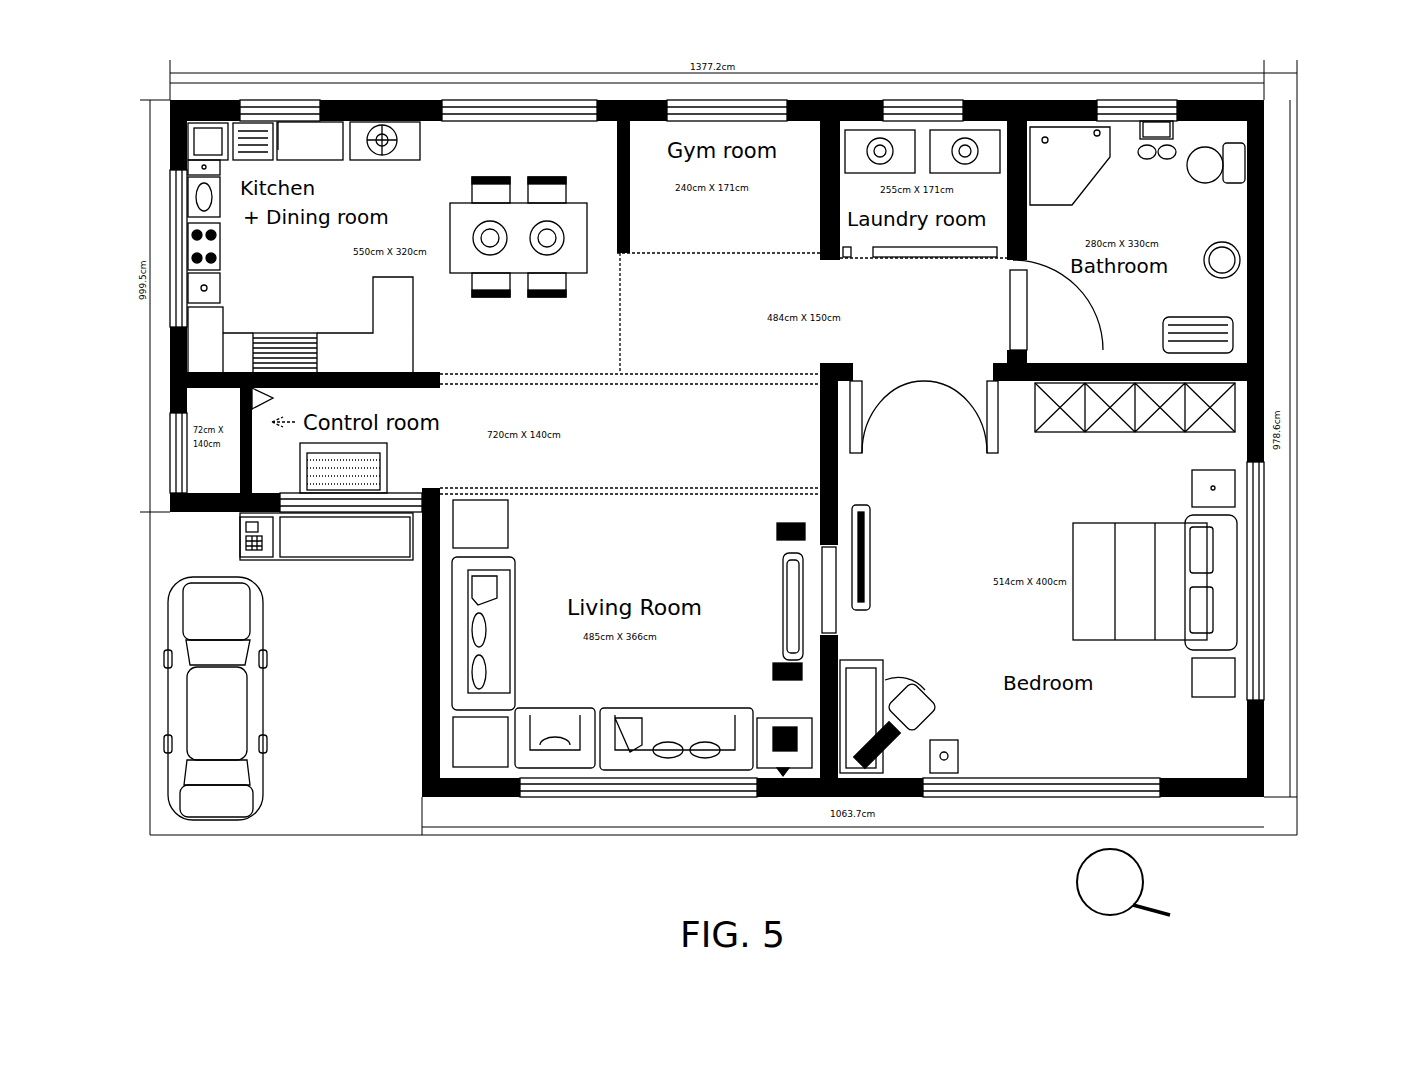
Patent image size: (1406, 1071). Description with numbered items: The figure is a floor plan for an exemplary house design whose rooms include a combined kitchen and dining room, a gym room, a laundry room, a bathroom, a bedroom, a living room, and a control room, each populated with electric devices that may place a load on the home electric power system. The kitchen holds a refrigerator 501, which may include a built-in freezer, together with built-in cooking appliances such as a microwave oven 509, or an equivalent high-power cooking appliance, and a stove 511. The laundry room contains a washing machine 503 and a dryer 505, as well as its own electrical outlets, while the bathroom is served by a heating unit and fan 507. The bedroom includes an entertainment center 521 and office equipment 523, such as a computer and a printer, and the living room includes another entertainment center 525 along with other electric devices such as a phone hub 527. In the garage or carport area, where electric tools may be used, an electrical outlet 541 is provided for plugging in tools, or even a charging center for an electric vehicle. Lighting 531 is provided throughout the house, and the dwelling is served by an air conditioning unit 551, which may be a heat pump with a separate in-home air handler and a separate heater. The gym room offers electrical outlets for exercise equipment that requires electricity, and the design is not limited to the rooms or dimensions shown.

The refrigerator 501 is at (397, 137).
The washing machine 503 is at (890, 108).
The dryer 505 is at (995, 108).
The heating unit and fan 507 is at (1165, 110).
The microwave oven 509 is at (265, 125).
The stove 511 is at (288, 338).
The entertainment center 521 is at (870, 556).
The office equipment 523 is at (900, 757).
The entertainment center 525 is at (787, 568).
The phone hub 527 is at (773, 718).
The lighting 531 is at (1237, 497).
The electrical outlet 541 is at (240, 523).
The air conditioning unit 551 is at (1156, 889).